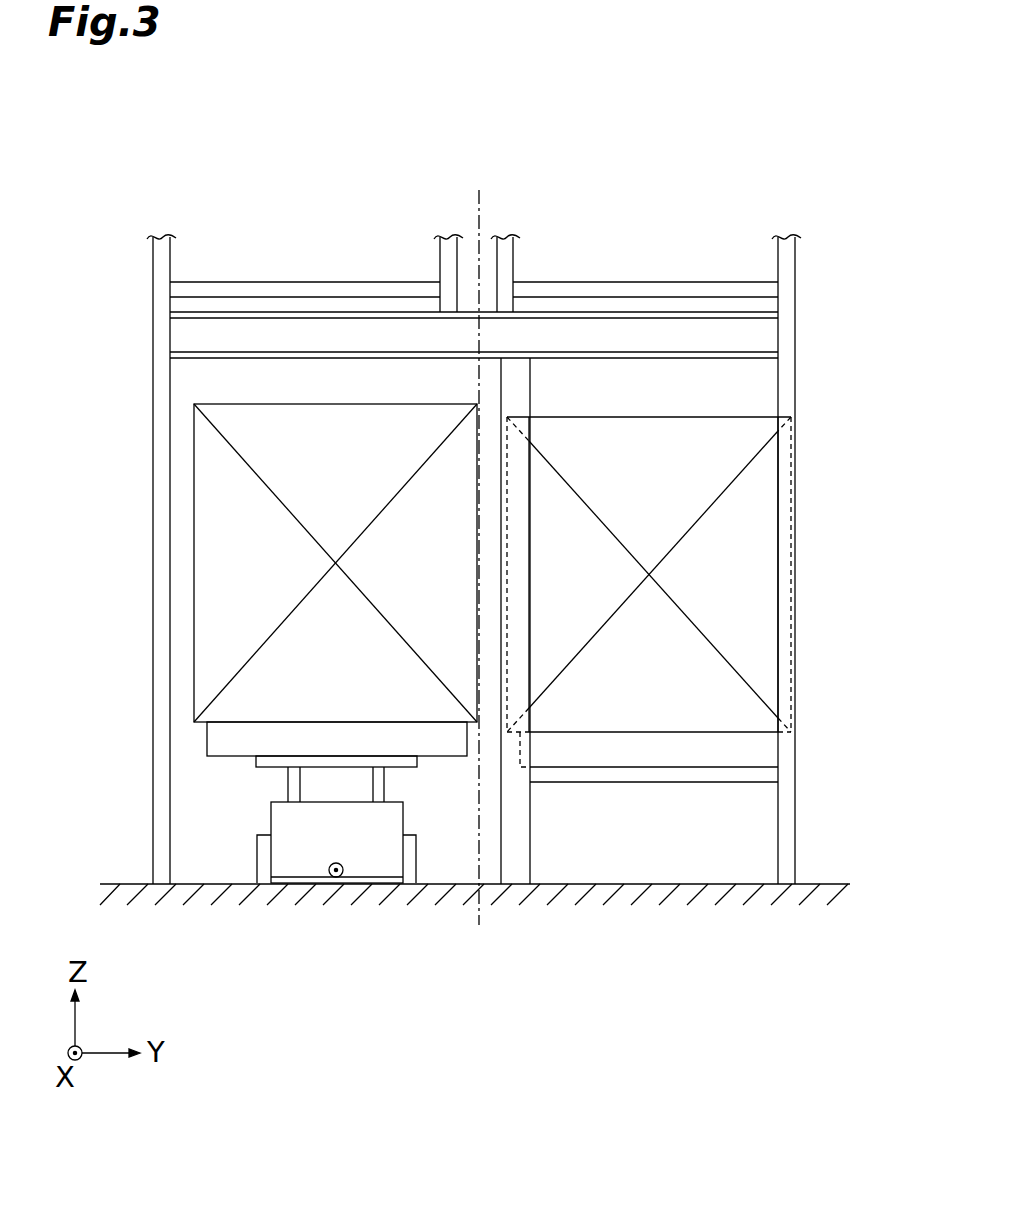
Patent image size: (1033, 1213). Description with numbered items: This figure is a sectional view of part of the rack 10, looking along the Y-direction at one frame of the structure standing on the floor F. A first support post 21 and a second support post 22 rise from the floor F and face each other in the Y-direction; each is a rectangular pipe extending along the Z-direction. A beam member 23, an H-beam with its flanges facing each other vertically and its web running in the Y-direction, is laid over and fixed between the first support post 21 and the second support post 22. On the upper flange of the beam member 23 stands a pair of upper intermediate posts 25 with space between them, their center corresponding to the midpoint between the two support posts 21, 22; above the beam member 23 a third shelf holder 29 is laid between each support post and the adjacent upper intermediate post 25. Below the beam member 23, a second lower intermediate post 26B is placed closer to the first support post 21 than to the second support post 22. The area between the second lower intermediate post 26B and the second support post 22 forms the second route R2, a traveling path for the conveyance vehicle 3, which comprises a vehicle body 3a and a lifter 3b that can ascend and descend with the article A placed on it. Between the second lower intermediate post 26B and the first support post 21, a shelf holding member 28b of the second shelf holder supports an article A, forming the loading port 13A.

The rack 10 is at (663, 158).
The second support post 22 is at (152, 380).
The first support post 21 is at (787, 377).
The upper intermediate post 25 is at (445, 260).
The third shelf holder 29 is at (228, 285).
The beam member 23 is at (325, 328).
The second lower intermediate post 26B is at (518, 383).
The loading port 13A is at (686, 398).
The article A is at (205, 560).
The shelf holding member 28b is at (737, 770).
The conveyance vehicle 3 is at (336, 802).
The vehicle body 3a is at (390, 818).
The lifter 3b is at (397, 762).
The second route R2 is at (329, 876).
The floor F is at (823, 883).